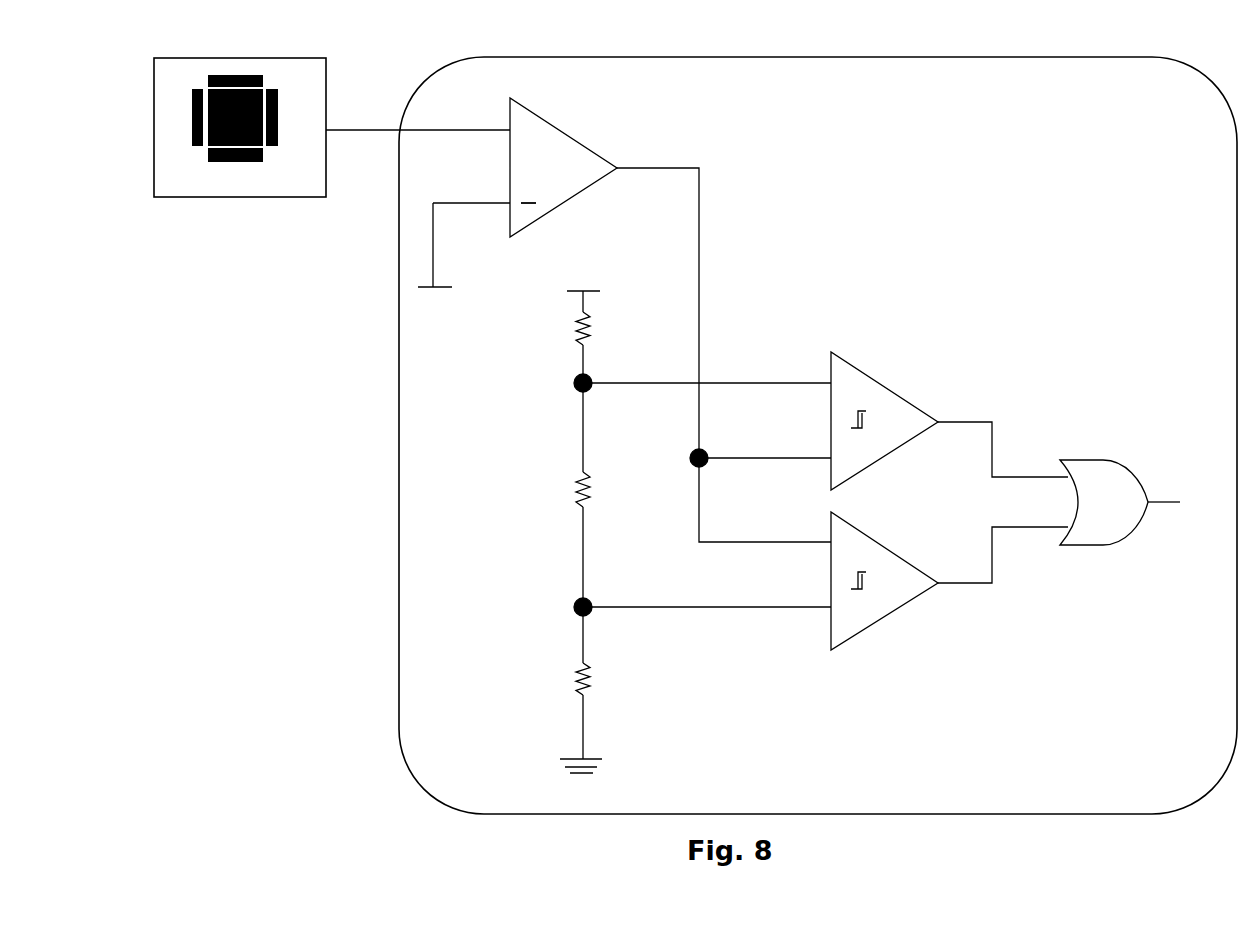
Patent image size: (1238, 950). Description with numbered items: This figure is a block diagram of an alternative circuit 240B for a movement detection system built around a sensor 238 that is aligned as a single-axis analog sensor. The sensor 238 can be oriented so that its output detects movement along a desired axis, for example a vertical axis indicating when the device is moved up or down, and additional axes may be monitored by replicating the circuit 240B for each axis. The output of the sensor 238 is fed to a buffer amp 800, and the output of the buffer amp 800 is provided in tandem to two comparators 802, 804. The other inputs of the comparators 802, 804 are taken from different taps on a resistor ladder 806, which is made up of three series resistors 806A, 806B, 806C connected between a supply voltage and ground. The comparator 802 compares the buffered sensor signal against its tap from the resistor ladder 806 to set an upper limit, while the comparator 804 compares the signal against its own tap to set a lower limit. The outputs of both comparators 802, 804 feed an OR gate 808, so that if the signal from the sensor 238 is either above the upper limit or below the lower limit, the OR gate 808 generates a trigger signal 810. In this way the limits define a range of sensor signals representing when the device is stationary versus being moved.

The alternative circuit 240B is at (705, 57).
The sensor 238 is at (238, 197).
The buffer amp 800 is at (517, 192).
The comparator 802 is at (884, 421).
The comparator 804 is at (884, 581).
The resistor ladder 806 is at (541, 524).
The resistor 806A is at (613, 328).
The resistor 806B is at (613, 489).
The resistor 806C is at (613, 679).
The OR gate 808 is at (1104, 490).
The trigger signal 810 is at (1183, 502).